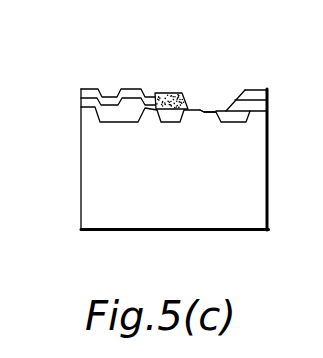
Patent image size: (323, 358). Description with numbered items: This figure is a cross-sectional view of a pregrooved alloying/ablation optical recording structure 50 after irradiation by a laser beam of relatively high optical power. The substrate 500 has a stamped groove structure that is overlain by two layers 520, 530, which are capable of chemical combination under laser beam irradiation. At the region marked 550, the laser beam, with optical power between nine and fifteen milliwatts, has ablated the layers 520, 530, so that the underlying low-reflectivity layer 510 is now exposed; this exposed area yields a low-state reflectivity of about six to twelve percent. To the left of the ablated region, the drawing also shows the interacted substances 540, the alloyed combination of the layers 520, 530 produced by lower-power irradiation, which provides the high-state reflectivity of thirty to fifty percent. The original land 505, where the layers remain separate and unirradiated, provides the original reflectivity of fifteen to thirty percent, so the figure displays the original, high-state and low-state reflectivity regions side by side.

The optical recording structure 50 is at (66, 162).
The substrate 500 is at (175, 159).
The land 505 is at (88, 90).
The layer 510 is at (210, 110).
The layer 520 is at (81, 107).
The layer 530 is at (80, 98).
The interacted substances 540 is at (167, 92).
The ablation 550 is at (220, 108).